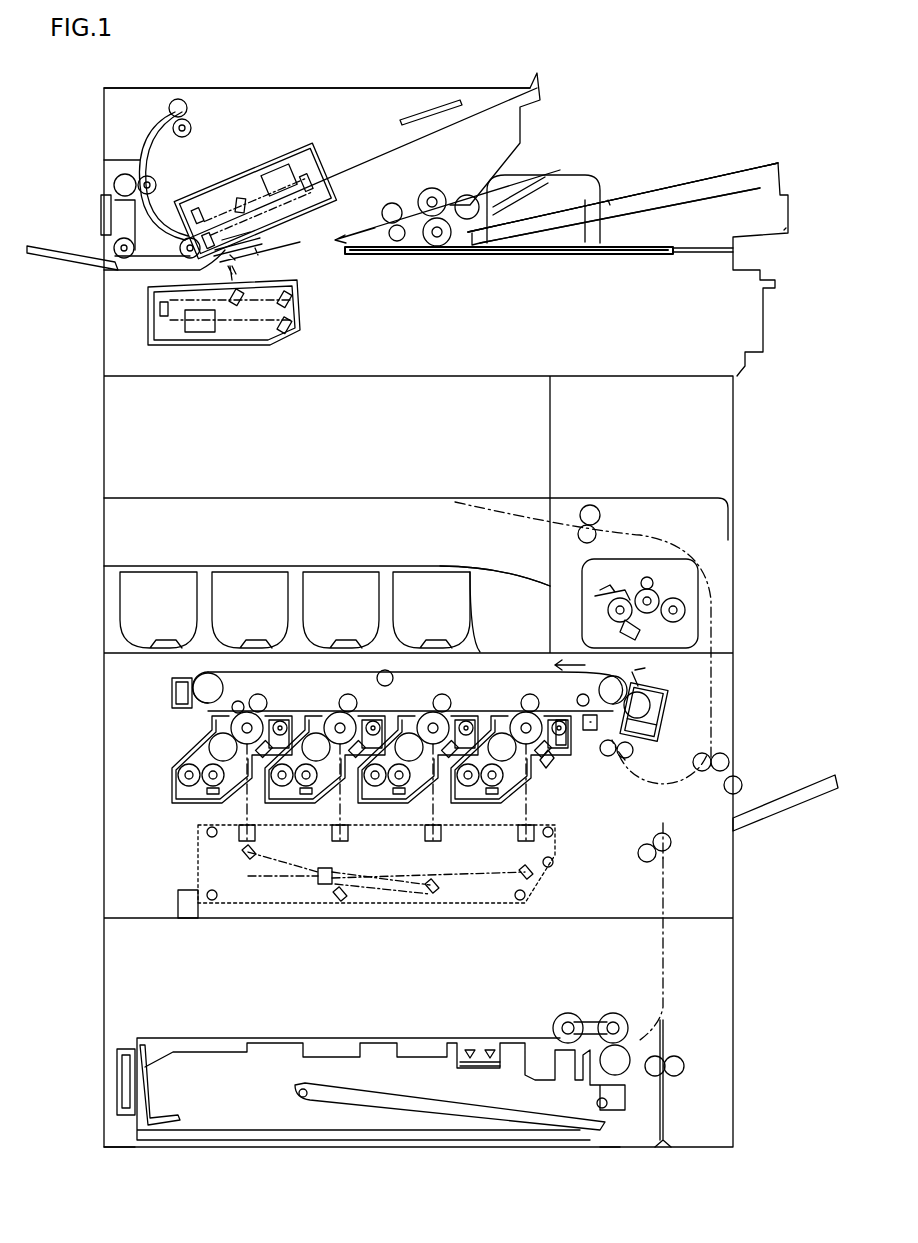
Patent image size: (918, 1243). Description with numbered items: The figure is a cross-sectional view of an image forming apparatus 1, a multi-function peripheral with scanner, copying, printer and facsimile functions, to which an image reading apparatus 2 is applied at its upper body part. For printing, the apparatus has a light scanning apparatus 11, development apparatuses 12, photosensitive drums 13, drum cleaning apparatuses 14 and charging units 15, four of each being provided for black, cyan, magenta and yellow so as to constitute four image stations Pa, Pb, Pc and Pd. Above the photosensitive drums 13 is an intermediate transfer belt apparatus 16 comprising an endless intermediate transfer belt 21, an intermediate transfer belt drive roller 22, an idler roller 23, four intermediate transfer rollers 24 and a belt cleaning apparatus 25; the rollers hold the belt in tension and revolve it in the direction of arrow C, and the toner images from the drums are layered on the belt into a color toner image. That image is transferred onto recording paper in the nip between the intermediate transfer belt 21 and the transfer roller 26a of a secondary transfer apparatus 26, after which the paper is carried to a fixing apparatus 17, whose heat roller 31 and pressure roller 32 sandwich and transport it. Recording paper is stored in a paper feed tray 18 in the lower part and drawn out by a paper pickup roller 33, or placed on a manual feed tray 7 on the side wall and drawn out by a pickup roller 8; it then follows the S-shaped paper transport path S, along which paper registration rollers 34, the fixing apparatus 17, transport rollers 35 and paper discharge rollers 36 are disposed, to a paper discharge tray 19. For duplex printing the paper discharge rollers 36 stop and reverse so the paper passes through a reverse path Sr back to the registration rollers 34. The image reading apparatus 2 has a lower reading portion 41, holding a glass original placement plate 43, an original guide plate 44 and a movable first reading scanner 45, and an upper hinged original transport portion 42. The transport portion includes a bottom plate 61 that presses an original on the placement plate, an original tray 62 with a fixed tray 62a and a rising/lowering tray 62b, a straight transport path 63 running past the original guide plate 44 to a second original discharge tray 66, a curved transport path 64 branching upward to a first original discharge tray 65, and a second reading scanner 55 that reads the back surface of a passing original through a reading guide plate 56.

The image forming apparatus 1 is at (91, 804).
The image reading apparatus 2 is at (822, 100).
The manual feed tray 7 is at (808, 800).
The pickup roller 8 is at (745, 780).
The light scanning apparatus 11 is at (555, 864).
The development apparatuses 12 is at (474, 822).
The photosensitive drums 13 is at (512, 712).
The drum cleaning apparatuses 14 is at (570, 740).
The charging units 15 is at (552, 765).
The intermediate transfer belt apparatus 16 is at (480, 660).
The fixing apparatus 17 is at (705, 590).
The paper feed tray 18 is at (115, 1082).
The paper discharge tray 19 is at (225, 565).
The intermediate transfer belt 21 is at (502, 665).
The intermediate transfer belt drive roller 22 is at (620, 685).
The idler roller 23 is at (210, 690).
The intermediate transfer rollers 24 is at (350, 694).
The belt cleaning apparatus 25 is at (170, 694).
The secondary transfer apparatus 26 is at (665, 728).
The transfer roller 26a is at (645, 712).
The heat roller 31 is at (645, 596).
The pressure roller 32 is at (680, 615).
The paper pickup roller 33 is at (570, 1010).
The paper registration rollers 34 is at (632, 756).
The transport rollers 35 is at (672, 840).
The paper discharge rollers 36 is at (590, 504).
The reading portion 41 is at (787, 300).
The original transport portion 42 is at (764, 155).
The original placement plate 43 is at (585, 256).
The original guide plate 44 is at (262, 258).
The first reading scanner 45 is at (302, 318).
The second reading scanner 55 is at (250, 135).
The reading guide plate 56 is at (228, 230).
The bottom plate 61 is at (668, 244).
The original tray 62 is at (713, 116).
The fixed tray 62a is at (705, 178).
The rising/lowering tray 62b is at (568, 205).
The straight transport path 63 is at (372, 250).
The curved transport path 64 is at (140, 145).
The first original discharge tray 65 is at (340, 122).
The second original discharge tray 66 is at (65, 245).
The image station Pa is at (514, 683).
The image station Pb is at (412, 684).
The image station Pc is at (330, 680).
The image station Pd is at (177, 790).
The paper transport path S is at (618, 798).
The reverse path Sr is at (730, 665).
The direction of arrow C is at (585, 652).